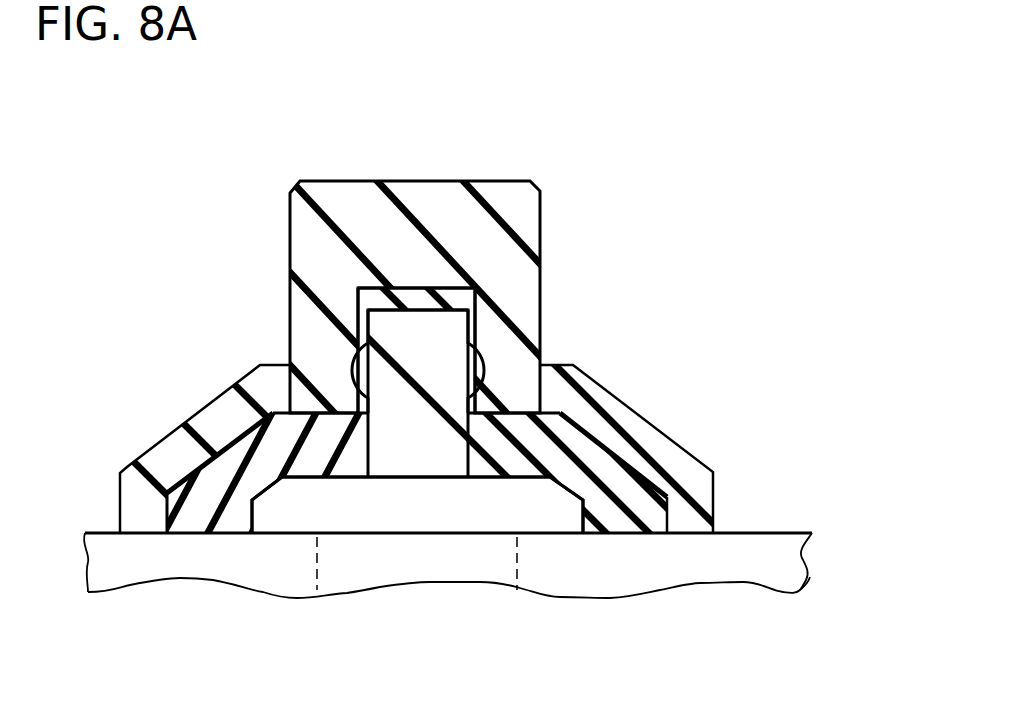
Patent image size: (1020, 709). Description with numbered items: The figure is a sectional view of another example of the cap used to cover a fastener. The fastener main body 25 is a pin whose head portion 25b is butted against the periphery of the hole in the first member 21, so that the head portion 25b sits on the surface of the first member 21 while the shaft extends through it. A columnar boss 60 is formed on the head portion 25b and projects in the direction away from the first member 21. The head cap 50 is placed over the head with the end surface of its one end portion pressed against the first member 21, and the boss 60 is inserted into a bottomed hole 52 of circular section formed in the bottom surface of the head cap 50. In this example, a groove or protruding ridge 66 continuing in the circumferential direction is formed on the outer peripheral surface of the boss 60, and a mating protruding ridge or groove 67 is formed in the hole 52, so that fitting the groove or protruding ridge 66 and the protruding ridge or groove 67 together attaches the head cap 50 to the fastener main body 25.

The first member 21 is at (775, 532).
The fastener main body 25 is at (553, 477).
The head portion 25b is at (270, 483).
The head cap 50 is at (342, 181).
The hole 52 is at (386, 395).
The boss 60 is at (470, 322).
The groove or protruding ridge 66 is at (357, 362).
The protruding ridge or groove 67 is at (443, 312).